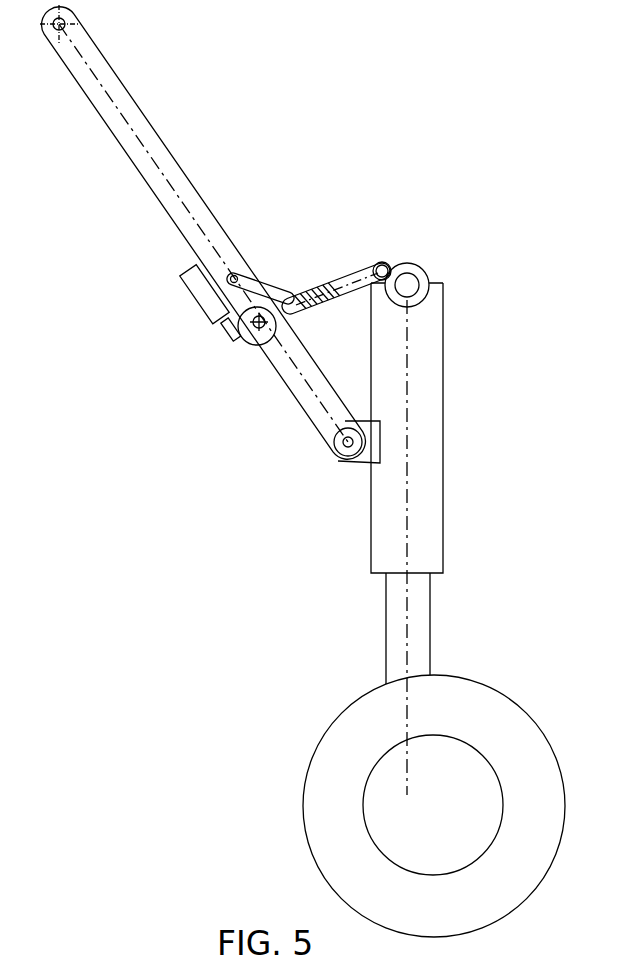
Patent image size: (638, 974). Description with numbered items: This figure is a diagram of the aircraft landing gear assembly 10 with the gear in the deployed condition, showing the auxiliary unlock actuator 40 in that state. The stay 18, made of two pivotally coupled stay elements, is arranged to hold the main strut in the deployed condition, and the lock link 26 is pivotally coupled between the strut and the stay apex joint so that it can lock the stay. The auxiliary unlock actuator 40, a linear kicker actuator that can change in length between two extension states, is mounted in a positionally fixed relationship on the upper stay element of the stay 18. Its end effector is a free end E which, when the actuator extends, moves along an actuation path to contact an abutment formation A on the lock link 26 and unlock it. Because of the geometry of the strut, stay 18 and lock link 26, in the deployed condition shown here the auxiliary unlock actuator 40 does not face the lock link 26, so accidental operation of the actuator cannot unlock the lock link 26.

The aircraft landing gear assembly 10 is at (494, 117).
The stay 18 is at (194, 180).
The lock link 26 is at (335, 281).
The auxiliary unlock actuator 40 is at (194, 307).
The abutment formation A is at (284, 322).
The free end E is at (240, 344).